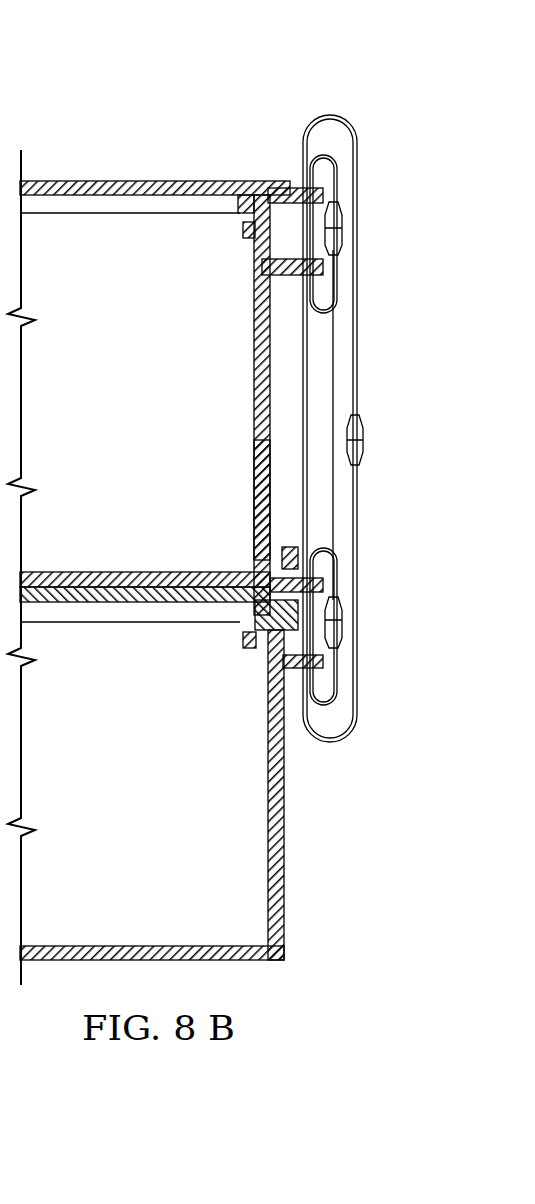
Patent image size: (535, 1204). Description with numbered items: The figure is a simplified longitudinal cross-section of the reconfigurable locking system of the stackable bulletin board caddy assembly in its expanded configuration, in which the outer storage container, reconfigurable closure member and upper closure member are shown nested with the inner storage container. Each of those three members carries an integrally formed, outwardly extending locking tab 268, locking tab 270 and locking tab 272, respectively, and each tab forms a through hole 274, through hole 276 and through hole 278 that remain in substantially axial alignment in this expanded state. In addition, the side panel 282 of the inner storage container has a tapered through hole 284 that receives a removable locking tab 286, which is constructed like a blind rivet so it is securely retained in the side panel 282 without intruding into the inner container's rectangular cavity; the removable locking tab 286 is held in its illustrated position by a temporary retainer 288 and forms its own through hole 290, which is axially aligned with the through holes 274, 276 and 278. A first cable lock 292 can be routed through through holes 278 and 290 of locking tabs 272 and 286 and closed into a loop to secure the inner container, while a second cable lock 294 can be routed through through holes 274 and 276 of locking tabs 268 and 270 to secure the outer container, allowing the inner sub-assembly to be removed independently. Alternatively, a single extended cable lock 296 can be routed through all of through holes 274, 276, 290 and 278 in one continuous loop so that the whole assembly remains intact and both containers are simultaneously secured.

The locking tab 268 is at (288, 668).
The locking tab 270 is at (313, 583).
The locking tab 272 is at (296, 190).
The through hole 274 is at (312, 700).
The through hole 276 is at (318, 560).
The through hole 278 is at (317, 178).
The side panel 282 is at (256, 470).
The tapered through hole 284 is at (262, 274).
The removable locking tab 286 is at (260, 268).
The temporary retainer 288 is at (297, 275).
The through hole 290 is at (315, 262).
The cable lock 292 is at (334, 212).
The cable lock 294 is at (340, 630).
The cable lock 296 is at (358, 430).